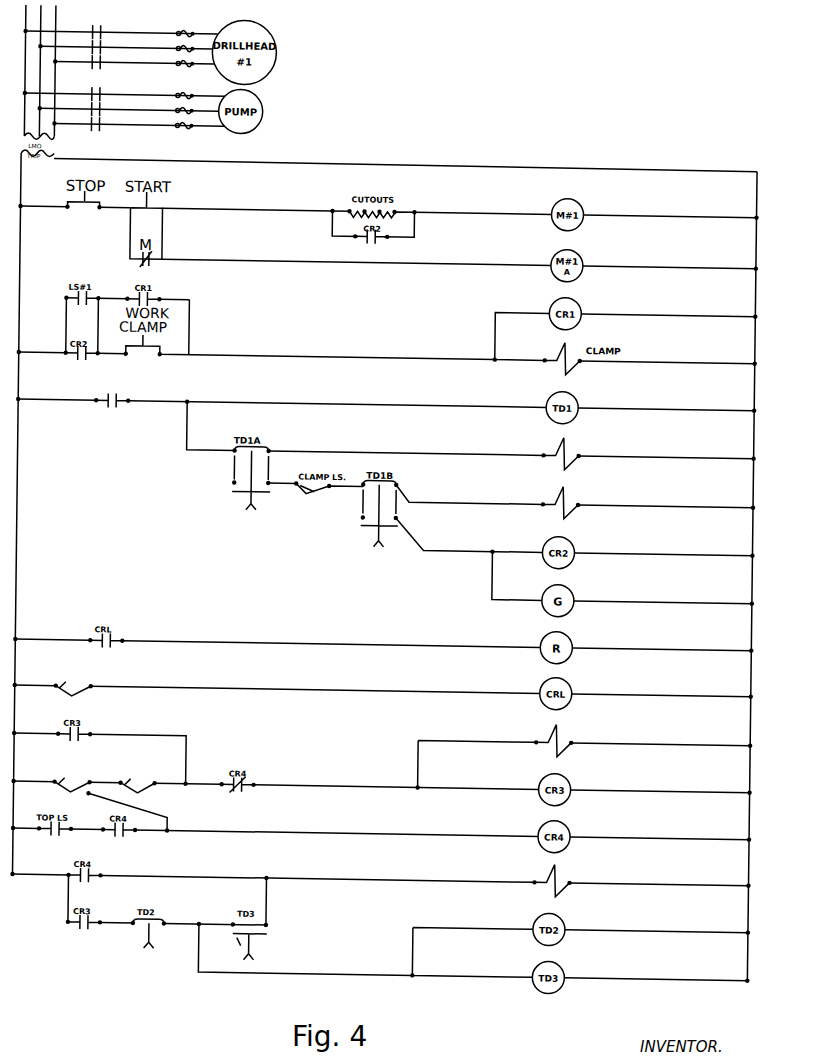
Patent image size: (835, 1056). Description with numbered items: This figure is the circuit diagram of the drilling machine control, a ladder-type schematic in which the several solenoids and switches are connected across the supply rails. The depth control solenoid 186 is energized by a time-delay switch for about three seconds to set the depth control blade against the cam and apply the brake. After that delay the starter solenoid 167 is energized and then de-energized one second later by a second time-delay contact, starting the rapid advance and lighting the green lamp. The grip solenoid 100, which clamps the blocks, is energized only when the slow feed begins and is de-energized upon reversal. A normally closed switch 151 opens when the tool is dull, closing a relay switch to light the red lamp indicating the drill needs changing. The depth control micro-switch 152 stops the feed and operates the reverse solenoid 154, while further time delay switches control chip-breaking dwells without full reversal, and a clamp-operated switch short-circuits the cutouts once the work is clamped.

The depth control solenoid No. 1 186 is at (595, 453).
The starter solenoid No. 2 167 is at (593, 502).
The grip solenoid 100 is at (433, 762).
The normally closed switch 151 is at (67, 683).
The micro-switch No. 2 152 is at (58, 780).
The reverse solenoid No. 4 154 is at (594, 880).